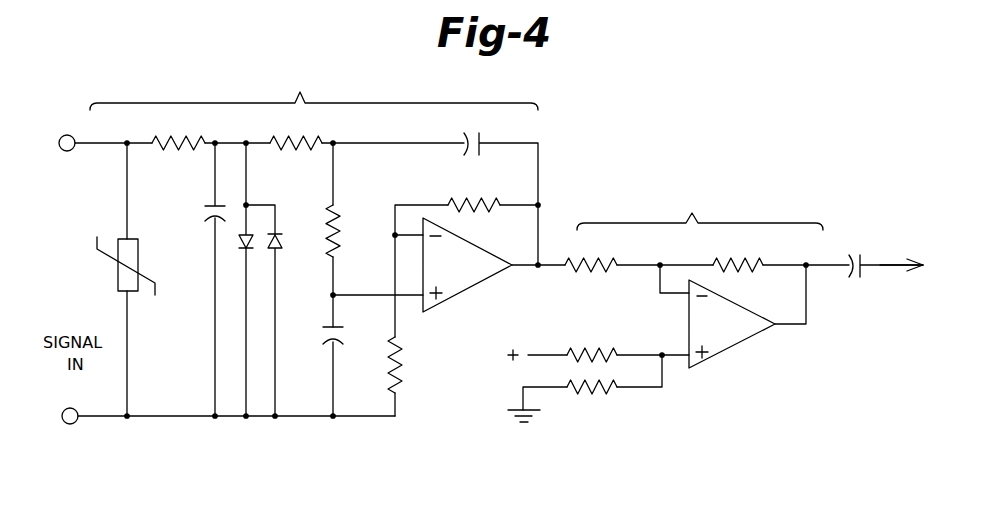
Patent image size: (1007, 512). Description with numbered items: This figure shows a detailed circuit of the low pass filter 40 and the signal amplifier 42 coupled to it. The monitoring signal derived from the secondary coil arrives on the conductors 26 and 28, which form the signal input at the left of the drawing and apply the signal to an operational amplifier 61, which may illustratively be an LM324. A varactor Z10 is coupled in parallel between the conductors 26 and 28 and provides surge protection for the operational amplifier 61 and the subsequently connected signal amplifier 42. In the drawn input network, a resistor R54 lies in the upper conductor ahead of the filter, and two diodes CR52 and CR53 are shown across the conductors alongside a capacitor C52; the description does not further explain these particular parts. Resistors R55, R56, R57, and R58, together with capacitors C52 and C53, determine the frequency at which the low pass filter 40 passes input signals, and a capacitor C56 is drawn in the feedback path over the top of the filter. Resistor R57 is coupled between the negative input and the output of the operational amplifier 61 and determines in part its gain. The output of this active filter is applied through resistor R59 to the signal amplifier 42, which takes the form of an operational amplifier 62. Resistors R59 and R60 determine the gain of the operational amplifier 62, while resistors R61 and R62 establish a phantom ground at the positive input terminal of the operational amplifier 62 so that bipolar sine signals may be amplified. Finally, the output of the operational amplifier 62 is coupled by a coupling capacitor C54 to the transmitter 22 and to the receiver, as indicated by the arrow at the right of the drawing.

The conductor 26 is at (90, 141).
The conductor 28 is at (107, 417).
The low pass filter 40 is at (314, 86).
The signal amplifier 42 is at (700, 209).
The operational amplifier 61 is at (462, 290).
The operational amplifier 62 is at (727, 344).
The varactor Z10 is at (137, 279).
The resistor R54 is at (211, 130).
The resistor R55 is at (367, 130).
The resistor R56 is at (374, 235).
The resistor R57 is at (465, 205).
The resistor R58 is at (418, 325).
The resistor R59 is at (639, 254).
The resistor R60 is at (781, 254).
The resistor R61 is at (598, 341).
The resistor R62 is at (585, 388).
The capacitor C52 is at (199, 280).
The capacitor C53 is at (349, 372).
The coupling capacitor C54 is at (882, 253).
The capacitor C56 is at (502, 188).
The diode CR52 is at (241, 249).
The diode CR53 is at (287, 311).
The transmitter 22 is at (889, 289).